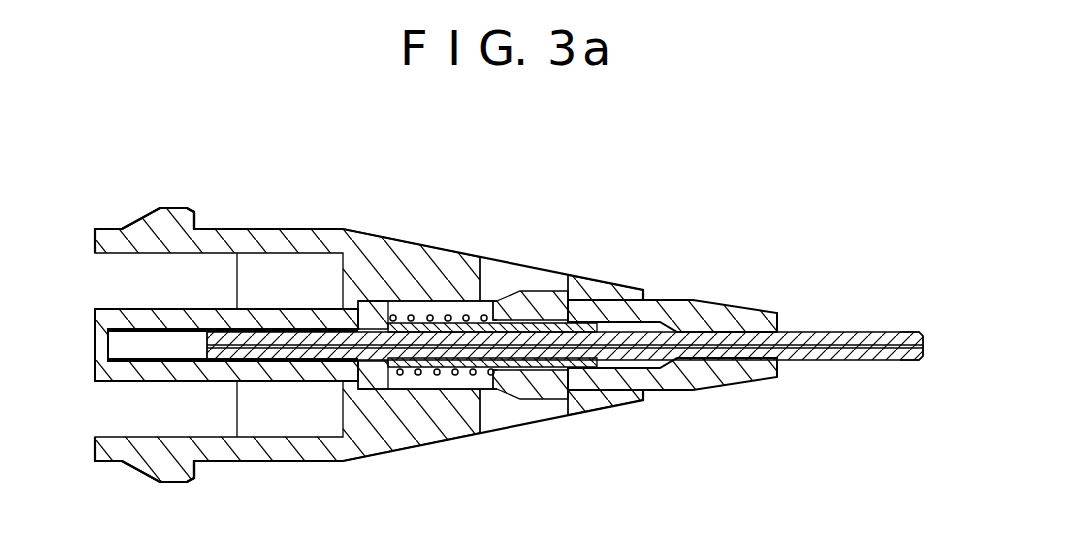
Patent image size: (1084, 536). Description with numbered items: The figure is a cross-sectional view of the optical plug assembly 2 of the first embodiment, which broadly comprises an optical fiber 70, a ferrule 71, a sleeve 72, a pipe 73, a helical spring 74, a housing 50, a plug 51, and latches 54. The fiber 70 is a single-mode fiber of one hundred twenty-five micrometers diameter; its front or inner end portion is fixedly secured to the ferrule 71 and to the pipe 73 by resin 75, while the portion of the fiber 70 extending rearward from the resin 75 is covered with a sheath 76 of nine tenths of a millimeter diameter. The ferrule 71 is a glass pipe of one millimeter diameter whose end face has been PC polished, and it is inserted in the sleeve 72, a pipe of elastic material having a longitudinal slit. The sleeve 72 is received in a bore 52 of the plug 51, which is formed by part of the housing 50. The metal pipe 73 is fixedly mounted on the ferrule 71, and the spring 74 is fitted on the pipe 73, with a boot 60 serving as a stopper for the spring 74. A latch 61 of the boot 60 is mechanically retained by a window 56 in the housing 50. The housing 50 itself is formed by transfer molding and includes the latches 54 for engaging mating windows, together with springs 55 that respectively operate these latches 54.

The optical plug assembly 2 is at (353, 220).
The housing 50 is at (420, 245).
The plug 51 is at (113, 318).
The bore 52 is at (157, 343).
The latch 54 is at (170, 213).
The spring 55 is at (248, 235).
The window 56 is at (497, 268).
The boot 60 is at (686, 300).
The latch 61 is at (552, 290).
The optical fiber 70 is at (263, 320).
The ferrule 71 is at (308, 322).
The sleeve 72 is at (208, 328).
The pipe 73 is at (372, 311).
The helical spring 74 is at (411, 322).
The resin 75 is at (451, 340).
The sheath 76 is at (884, 338).